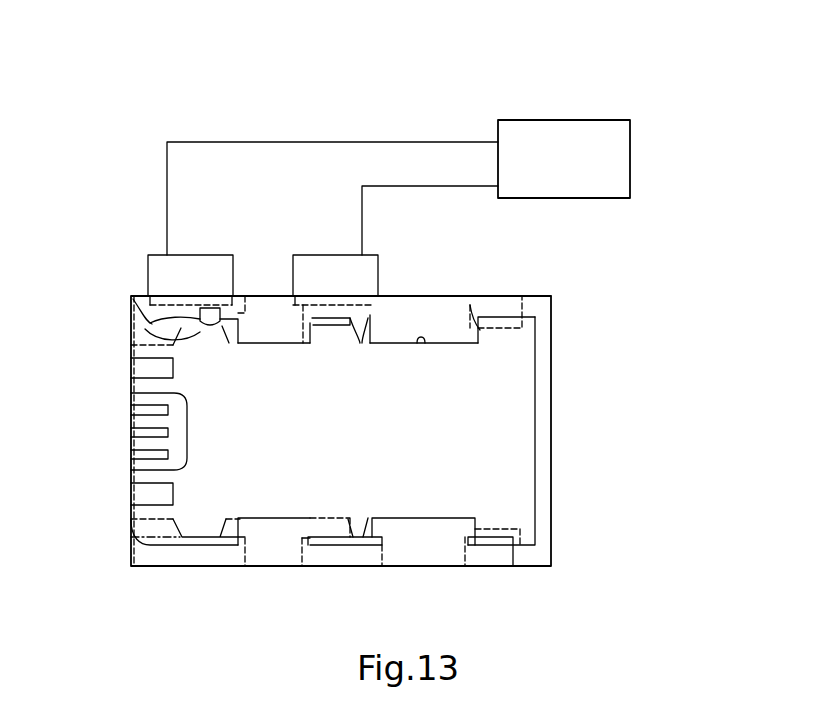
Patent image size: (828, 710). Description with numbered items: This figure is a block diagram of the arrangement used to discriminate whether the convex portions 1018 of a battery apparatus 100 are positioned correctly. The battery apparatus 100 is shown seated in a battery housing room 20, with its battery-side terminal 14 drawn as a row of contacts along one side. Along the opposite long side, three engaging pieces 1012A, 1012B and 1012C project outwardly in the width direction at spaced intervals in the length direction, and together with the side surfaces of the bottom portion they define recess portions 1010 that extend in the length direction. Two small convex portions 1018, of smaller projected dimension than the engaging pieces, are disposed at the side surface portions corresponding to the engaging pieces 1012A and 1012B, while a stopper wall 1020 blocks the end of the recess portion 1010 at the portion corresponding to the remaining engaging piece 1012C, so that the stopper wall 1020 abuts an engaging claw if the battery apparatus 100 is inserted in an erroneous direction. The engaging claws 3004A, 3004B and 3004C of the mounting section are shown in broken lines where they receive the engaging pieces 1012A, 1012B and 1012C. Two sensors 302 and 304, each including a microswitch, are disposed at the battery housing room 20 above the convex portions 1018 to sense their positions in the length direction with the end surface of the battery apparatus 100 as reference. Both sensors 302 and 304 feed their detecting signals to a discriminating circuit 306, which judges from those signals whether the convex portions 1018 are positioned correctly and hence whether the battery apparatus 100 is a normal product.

The battery apparatus 100 is at (540, 402).
The battery-side terminal 14 is at (135, 442).
The battery housing room 20 is at (386, 563).
The recess portion 1010 is at (417, 343).
The engaging piece 1012A is at (145, 322).
The engaging piece 1012B is at (380, 312).
The engaging piece 1012C is at (478, 312).
The convex portion 1018 is at (200, 327).
The stopper wall 1020 is at (532, 322).
The engaging claw 3004A is at (250, 312).
The engaging claw 3004B is at (418, 318).
The engaging claw 3004C is at (552, 310).
The sensor 302 is at (193, 254).
The sensor 304 is at (336, 254).
The discriminating circuit 306 is at (560, 120).